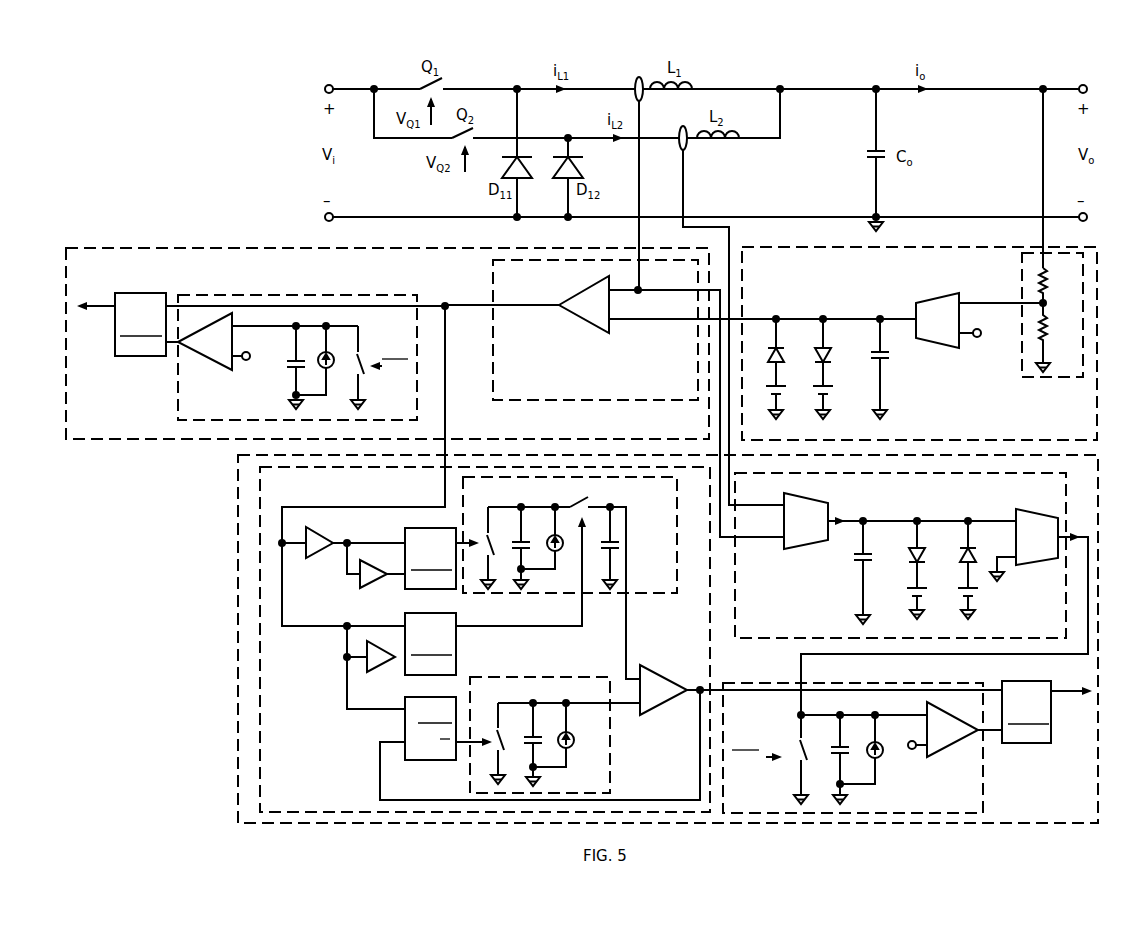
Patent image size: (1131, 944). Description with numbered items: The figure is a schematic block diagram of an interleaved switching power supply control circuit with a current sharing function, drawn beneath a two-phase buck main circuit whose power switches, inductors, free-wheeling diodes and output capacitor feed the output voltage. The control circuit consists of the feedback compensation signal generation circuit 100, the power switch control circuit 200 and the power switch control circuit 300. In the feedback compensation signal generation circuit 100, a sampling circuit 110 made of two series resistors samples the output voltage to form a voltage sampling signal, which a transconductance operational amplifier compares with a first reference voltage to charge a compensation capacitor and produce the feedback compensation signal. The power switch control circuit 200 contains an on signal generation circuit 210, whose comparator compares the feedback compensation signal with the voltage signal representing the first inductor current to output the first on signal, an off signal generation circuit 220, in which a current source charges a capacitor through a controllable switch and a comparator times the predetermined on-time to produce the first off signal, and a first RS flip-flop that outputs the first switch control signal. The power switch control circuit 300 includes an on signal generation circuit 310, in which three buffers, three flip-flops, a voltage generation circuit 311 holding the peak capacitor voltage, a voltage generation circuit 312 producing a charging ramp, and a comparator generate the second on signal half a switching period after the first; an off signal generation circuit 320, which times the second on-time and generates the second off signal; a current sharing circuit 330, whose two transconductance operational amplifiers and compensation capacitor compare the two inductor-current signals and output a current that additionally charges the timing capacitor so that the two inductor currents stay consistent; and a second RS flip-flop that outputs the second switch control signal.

The feedback compensation signal generation circuit 100 is at (919, 343).
The sampling circuit 110 is at (1077, 357).
The power switch control circuit 200 is at (425, 392).
The on signal generation circuit 210 is at (634, 392).
The off signal generation circuit 220 is at (223, 414).
The power switch control circuit 300 is at (668, 564).
The on signal generation circuit 310 is at (631, 558).
The voltage generation circuit 311 is at (665, 586).
The voltage generation circuit 312 is at (599, 786).
The off signal generation circuit 320 is at (977, 801).
The current sharing circuit 330 is at (771, 633).